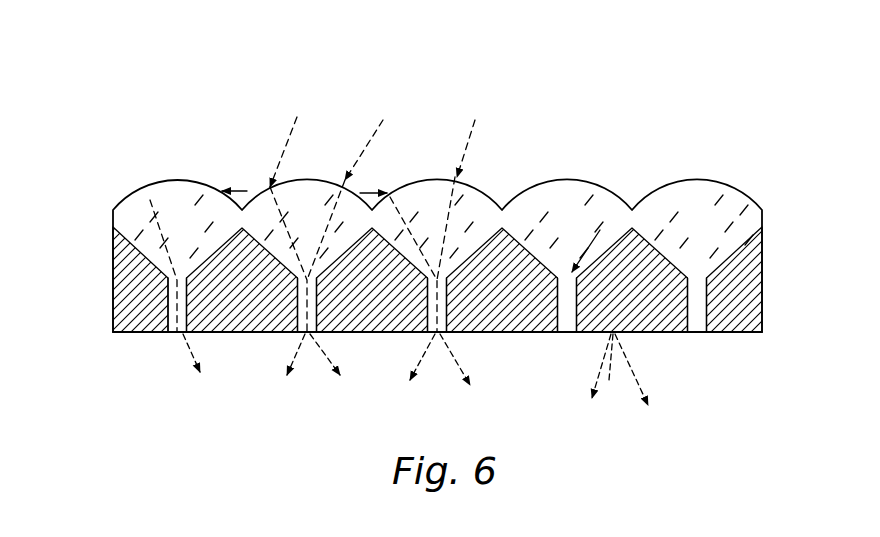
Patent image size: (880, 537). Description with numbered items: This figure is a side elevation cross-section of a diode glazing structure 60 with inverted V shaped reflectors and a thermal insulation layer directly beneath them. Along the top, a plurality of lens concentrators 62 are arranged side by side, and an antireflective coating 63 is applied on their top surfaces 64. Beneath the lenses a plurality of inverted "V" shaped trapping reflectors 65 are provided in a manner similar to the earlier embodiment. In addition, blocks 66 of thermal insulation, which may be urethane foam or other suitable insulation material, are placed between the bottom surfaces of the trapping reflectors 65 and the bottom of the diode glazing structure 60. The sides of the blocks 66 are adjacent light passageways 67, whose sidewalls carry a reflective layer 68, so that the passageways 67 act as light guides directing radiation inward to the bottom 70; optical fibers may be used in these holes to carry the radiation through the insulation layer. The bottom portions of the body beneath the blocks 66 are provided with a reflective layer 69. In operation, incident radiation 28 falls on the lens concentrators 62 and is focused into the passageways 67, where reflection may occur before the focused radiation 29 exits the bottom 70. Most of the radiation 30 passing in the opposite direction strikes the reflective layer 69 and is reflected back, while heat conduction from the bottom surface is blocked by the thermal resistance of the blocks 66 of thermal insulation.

The incident radiation 28 is at (288, 145).
The focused radiation 29 is at (188, 350).
The radiation in the opposite direction 30 is at (610, 365).
The diode glazing structure 60 is at (203, 118).
The lens concentrators 62 is at (135, 195).
The antireflective coating 63 is at (568, 183).
The top surfaces 64 is at (503, 209).
The inverted "V" shaped trapping reflectors 65 is at (113, 210).
The blocks of thermal insulation 66 is at (208, 334).
The light passageways 67 is at (175, 266).
The reflective layer 68 is at (558, 335).
The reflective layer 69 is at (150, 333).
The bottom 70 is at (750, 337).